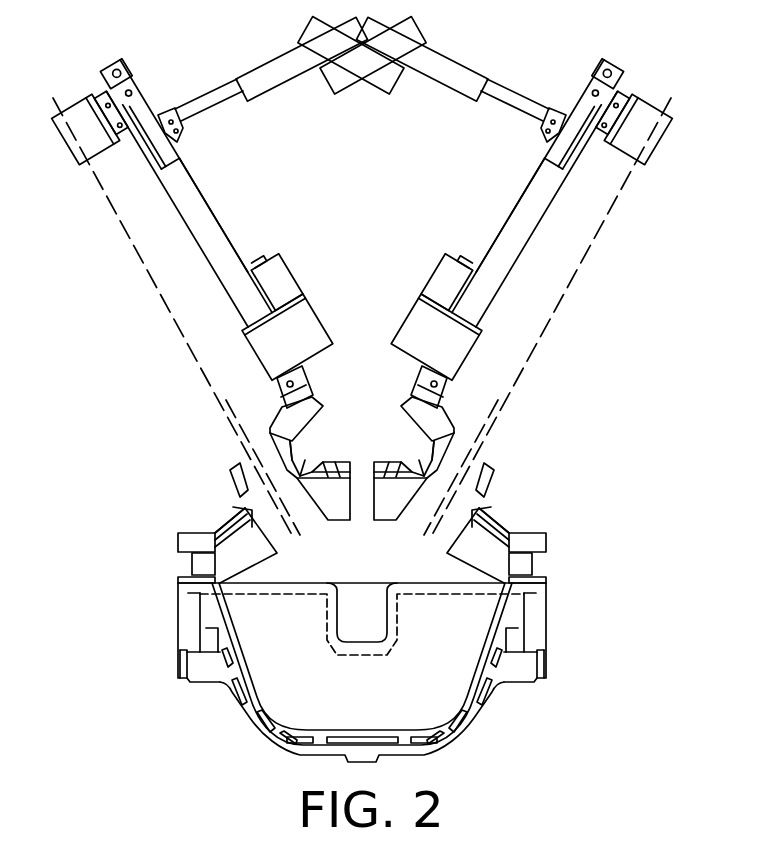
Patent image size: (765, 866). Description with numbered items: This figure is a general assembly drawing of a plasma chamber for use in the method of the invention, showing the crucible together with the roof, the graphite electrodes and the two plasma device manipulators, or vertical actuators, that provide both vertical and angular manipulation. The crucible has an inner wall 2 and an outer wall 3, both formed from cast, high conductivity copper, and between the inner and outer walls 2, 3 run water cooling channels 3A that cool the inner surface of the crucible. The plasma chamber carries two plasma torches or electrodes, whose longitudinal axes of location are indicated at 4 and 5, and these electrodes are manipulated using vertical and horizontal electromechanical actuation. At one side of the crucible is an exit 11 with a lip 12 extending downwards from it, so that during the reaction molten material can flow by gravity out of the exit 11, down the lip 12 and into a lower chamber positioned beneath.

The inner wall 2 is at (417, 730).
The outer wall 3 is at (310, 756).
The water cooling channels 3A is at (497, 652).
The longitudinal axis of location 4 is at (222, 395).
The longitudinal axis of location 5 is at (498, 395).
The exit 11 is at (398, 655).
The lip 12 is at (355, 643).